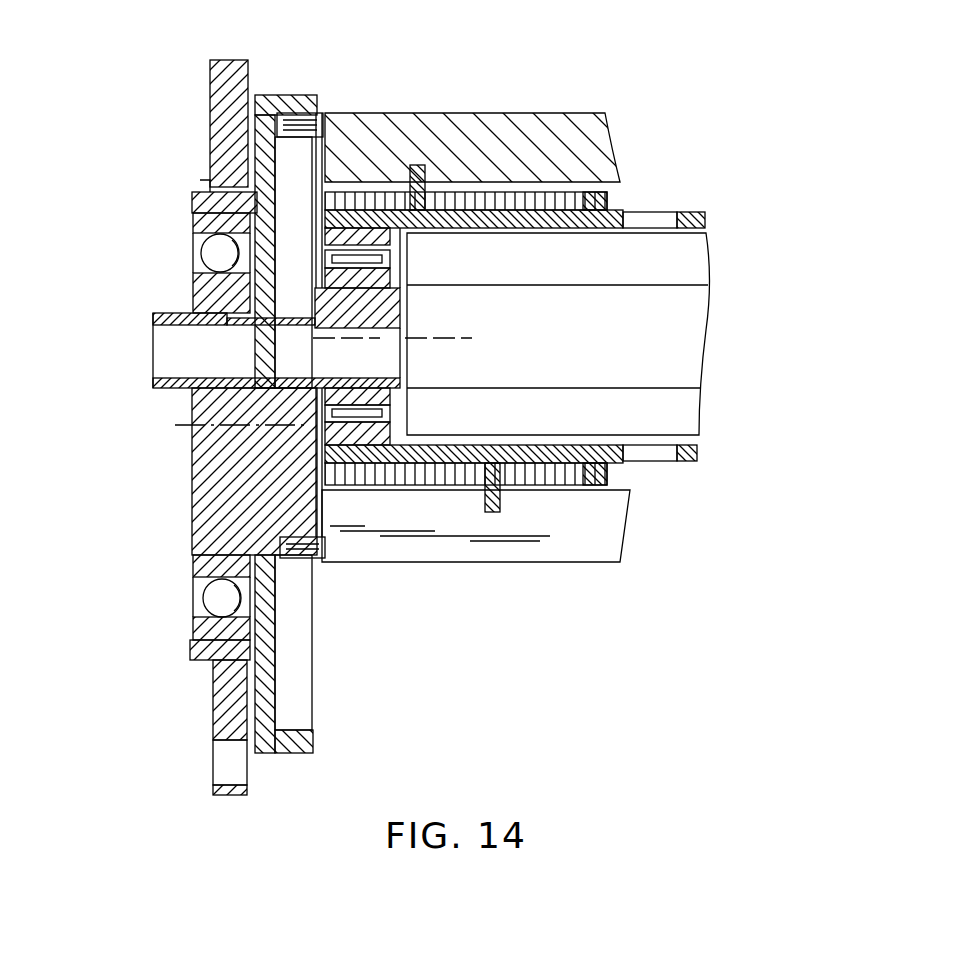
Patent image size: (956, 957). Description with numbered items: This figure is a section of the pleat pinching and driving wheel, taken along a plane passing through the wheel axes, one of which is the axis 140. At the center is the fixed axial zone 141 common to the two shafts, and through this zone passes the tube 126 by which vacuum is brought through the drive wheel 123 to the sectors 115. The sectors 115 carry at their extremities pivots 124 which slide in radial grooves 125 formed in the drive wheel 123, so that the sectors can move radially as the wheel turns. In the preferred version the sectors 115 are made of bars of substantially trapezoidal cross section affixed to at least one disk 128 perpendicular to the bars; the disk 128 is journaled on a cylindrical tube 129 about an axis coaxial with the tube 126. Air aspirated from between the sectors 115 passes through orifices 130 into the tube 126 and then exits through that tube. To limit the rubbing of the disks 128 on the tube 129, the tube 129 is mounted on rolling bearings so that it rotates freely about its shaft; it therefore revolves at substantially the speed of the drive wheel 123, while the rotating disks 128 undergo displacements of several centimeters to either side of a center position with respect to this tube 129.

The sector 115 is at (585, 135).
The drive wheel 123 is at (285, 108).
The pivot 124 is at (320, 113).
The radial groove 125 is at (300, 664).
The tube 126 is at (175, 358).
The disk 128 is at (418, 163).
The cylindrical tube 129 is at (618, 212).
The orifice 130 is at (662, 213).
The axis 140 is at (192, 448).
The fixed axial zone 141 is at (193, 542).